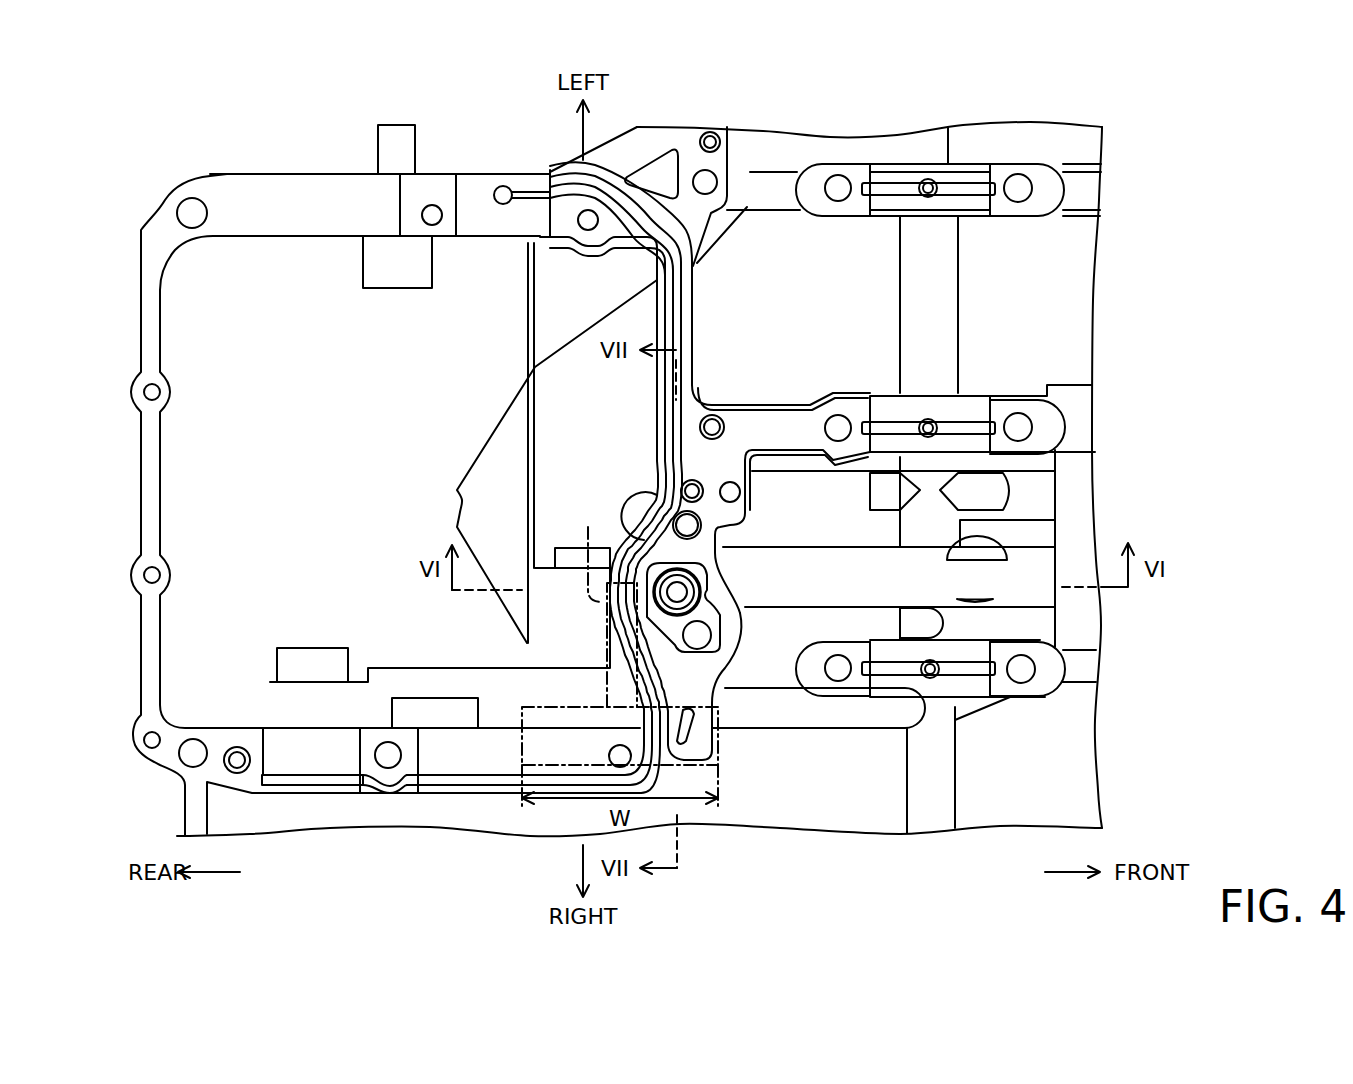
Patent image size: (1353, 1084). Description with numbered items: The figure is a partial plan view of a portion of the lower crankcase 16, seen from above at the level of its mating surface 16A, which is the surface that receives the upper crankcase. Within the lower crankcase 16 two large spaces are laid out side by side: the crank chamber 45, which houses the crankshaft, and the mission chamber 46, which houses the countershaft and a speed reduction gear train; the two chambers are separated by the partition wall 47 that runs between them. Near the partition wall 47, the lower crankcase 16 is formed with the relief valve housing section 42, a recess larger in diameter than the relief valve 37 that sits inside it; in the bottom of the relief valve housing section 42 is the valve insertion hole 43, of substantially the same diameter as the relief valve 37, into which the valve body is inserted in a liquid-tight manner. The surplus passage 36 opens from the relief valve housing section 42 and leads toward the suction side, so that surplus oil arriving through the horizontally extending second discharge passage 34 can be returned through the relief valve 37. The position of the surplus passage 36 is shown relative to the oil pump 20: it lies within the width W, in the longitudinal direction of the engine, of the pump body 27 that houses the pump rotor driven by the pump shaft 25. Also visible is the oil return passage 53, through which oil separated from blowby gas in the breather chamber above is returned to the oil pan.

The lower crankcase 16 is at (1119, 192).
The mating surface 16A is at (430, 192).
The oil pump 20 is at (510, 748).
The pump shaft 25 is at (615, 547).
The pump body 27 is at (513, 765).
The second discharge passage 34 is at (845, 568).
The surplus passage 36 is at (697, 649).
The relief valve 37 is at (675, 580).
The relief valve housing section 42 is at (712, 595).
The valve insertion hole 43 is at (702, 612).
The crank chamber 45 is at (992, 320).
The mission chamber 46 is at (327, 379).
The partition wall 47 is at (655, 407).
The oil return passage 53 is at (679, 516).